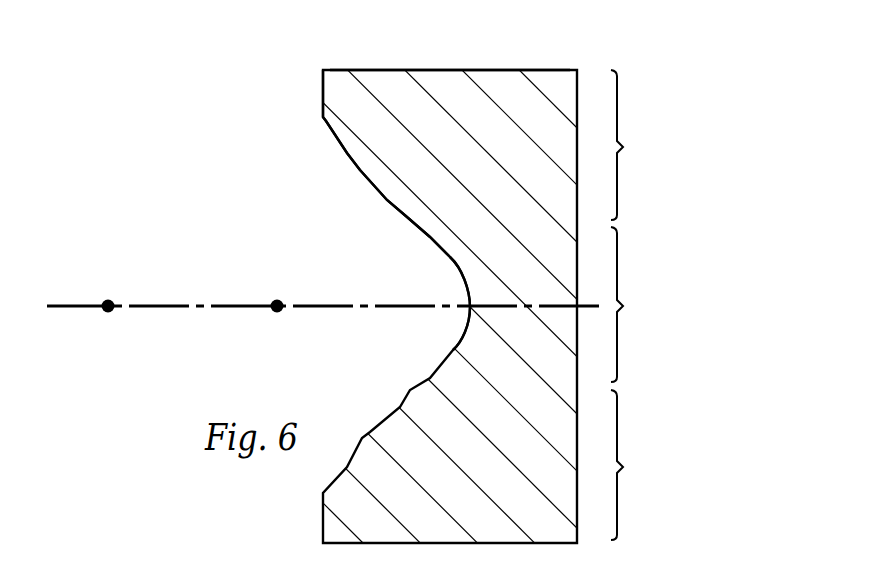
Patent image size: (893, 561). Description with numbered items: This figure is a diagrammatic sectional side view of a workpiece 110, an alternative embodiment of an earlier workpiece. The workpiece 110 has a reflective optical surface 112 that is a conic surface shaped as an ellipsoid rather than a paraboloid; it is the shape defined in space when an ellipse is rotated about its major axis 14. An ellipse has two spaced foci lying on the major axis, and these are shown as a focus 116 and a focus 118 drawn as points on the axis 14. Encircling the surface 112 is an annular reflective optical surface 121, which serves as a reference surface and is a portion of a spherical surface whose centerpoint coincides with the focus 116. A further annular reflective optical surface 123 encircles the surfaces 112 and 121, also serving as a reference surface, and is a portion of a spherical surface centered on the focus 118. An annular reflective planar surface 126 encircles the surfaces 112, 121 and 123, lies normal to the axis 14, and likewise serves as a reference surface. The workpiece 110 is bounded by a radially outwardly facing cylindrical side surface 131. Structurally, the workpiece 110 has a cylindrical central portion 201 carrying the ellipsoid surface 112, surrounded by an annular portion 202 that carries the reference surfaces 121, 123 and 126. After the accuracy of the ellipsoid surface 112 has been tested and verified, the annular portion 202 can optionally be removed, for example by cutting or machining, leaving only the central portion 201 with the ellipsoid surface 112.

The workpiece 110 is at (507, 69).
The cylindrical side surface 131 is at (393, 69).
The annular reflective planar surface 126 is at (322, 92).
The annular reflective optical surface 123 is at (346, 151).
The annular reflective optical surface 121 is at (386, 200).
The reflective optical surface 112 is at (459, 268).
The major axis 14 is at (360, 308).
The focus 116 is at (277, 301).
The focus 118 is at (108, 301).
The cylindrical central portion 201 is at (638, 304).
The annular portion 202 is at (638, 305).